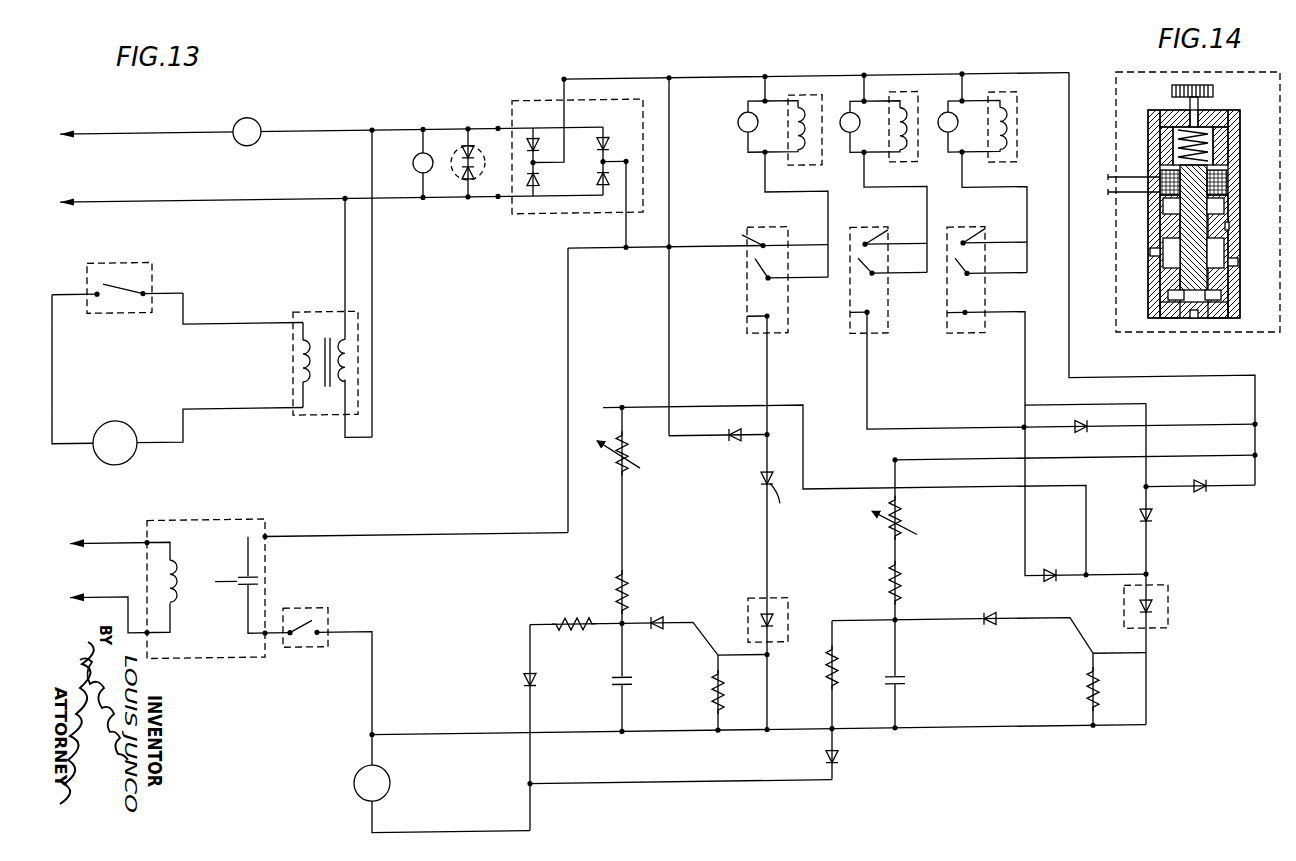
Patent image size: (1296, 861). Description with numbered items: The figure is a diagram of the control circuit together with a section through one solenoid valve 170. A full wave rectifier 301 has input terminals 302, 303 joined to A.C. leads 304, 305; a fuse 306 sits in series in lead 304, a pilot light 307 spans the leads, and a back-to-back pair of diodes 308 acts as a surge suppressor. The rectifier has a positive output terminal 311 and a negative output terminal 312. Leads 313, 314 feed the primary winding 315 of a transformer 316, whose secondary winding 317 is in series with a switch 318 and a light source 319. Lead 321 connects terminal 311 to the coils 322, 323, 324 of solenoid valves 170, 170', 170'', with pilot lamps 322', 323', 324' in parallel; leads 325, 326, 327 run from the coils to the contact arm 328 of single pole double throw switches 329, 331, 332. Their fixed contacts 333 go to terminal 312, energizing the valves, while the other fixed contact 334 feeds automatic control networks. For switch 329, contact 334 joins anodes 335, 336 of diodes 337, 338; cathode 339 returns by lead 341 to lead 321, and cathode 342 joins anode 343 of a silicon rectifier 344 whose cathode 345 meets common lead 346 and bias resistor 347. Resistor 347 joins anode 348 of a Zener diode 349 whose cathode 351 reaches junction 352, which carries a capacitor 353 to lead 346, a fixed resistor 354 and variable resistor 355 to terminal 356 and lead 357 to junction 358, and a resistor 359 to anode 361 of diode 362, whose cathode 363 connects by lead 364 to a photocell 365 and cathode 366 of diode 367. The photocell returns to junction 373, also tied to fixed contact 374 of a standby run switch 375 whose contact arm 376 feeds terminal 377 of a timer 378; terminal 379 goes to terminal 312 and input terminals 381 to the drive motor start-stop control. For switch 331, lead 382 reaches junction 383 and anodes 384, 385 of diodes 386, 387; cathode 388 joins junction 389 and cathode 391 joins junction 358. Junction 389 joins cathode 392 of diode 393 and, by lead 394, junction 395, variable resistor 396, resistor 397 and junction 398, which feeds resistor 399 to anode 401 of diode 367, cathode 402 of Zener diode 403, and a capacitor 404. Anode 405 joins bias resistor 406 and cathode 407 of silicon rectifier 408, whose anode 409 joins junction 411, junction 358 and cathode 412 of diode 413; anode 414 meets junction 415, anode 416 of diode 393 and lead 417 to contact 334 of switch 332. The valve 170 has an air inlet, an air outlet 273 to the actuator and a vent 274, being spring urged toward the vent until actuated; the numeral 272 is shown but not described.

In FIG. 13, the solenoid valve 170 is at (749, 178).
In FIG. 14, the solenoid valve 170 is at (1198, 190).
In FIG. 13, the solenoid valve 170' is at (858, 175).
In FIG. 13, the solenoid valve 170'' is at (1033, 162).
In FIG. 14, the valve port 272 is at (1238, 233).
In FIG. 14, the air outlet 273 is at (1145, 258).
In FIG. 14, the vent 274 is at (1238, 262).
In FIG. 13, the full wave rectifier 301 is at (535, 216).
In FIG. 13, the input terminal 302 is at (498, 126).
In FIG. 13, the input terminal 303 is at (498, 196).
In FIG. 13, the lead 304 is at (345, 122).
In FIG. 13, the lead 305 is at (319, 196).
In FIG. 13, the fuse 306 is at (244, 110).
In FIG. 13, the pilot light 307 is at (413, 160).
In FIG. 13, the diodes 308 is at (460, 139).
In FIG. 13, the positive output terminal 311 is at (564, 76).
In FIG. 13, the negative output terminal 312 is at (630, 139).
In FIG. 13, the lead 313 is at (374, 243).
In FIG. 13, the lead 314 is at (345, 254).
In FIG. 13, the primary winding 315 is at (353, 340).
In FIG. 13, the transformer 316 is at (325, 412).
In FIG. 13, the secondary winding 317 is at (300, 351).
In FIG. 13, the switch 318 is at (152, 260).
In FIG. 13, the light source 319 is at (120, 414).
In FIG. 13, the lead 321 is at (705, 77).
In FIG. 14, the lead 321 is at (1128, 176).
In FIG. 13, the coil 322 is at (795, 159).
In FIG. 13, the pilot lamp 322' is at (732, 125).
In FIG. 14, the pilot lamp 322' is at (1219, 179).
In FIG. 13, the coil 323 is at (894, 156).
In FIG. 13, the pilot lamp 323' is at (842, 115).
In FIG. 13, the coil 324 is at (993, 154).
In FIG. 13, the pilot lamp 324' is at (941, 115).
In FIG. 13, the lead 325 is at (788, 195).
In FIG. 14, the lead 325 is at (1130, 193).
In FIG. 13, the lead 326 is at (908, 192).
In FIG. 13, the lead 327 is at (1002, 193).
In FIG. 13, the contact arm 328 is at (755, 262).
In FIG. 13, the single pole double throw switch 329 is at (745, 335).
In FIG. 13, the single pole double throw switch 331 is at (852, 336).
In FIG. 13, the single pole double throw switch 332 is at (985, 337).
In FIG. 13, the fixed contact 333 is at (760, 248).
In FIG. 13, the fixed contact 334 is at (747, 318).
In FIG. 13, the anode 335 is at (745, 428).
In FIG. 13, the anode 336 is at (759, 478).
In FIG. 13, the diode 337 is at (732, 446).
In FIG. 13, the diode 338 is at (754, 490).
In FIG. 13, the cathode 339 is at (728, 433).
In FIG. 13, the lead 341 is at (669, 338).
In FIG. 13, the cathode 342 is at (790, 501).
In FIG. 13, the anode 343 is at (760, 607).
In FIG. 13, the silicon rectifier 344 is at (790, 616).
In FIG. 13, the cathode 345 is at (747, 632).
In FIG. 13, the common lead 346 is at (759, 733).
In FIG. 13, the bias resistor 347 is at (713, 684).
In FIG. 13, the anode 348 is at (660, 623).
In FIG. 13, the Zener diode 349 is at (660, 632).
In FIG. 13, the cathode 351 is at (652, 615).
In FIG. 13, the junction 352 is at (622, 622).
In FIG. 13, the capacitor 353 is at (612, 682).
In FIG. 13, the fixed resistor 354 is at (622, 570).
In FIG. 13, the variable resistor 355 is at (609, 515).
In FIG. 13, the terminal 356 is at (603, 407).
In FIG. 13, the lead 357 is at (640, 406).
In FIG. 13, the junction 358 is at (1086, 580).
In FIG. 13, the resistor 359 is at (560, 620).
In FIG. 13, the anode 361 is at (525, 672).
In FIG. 13, the diode 362 is at (523, 681).
In FIG. 13, the cathode 363 is at (526, 688).
In FIG. 13, the lead 364 is at (533, 716).
In FIG. 13, the photocell 365 is at (390, 774).
In FIG. 13, the cathode 366 is at (835, 769).
In FIG. 13, the diode 367 is at (848, 759).
In FIG. 13, the junction 373 is at (374, 730).
In FIG. 13, the fixed contact 374 is at (318, 636).
In FIG. 13, the standby run switch 375 is at (320, 606).
In FIG. 13, the contact arm 376 is at (300, 614).
In FIG. 13, the terminal 377 is at (265, 647).
In FIG. 13, the timer 378 is at (267, 515).
In FIG. 13, the terminal 379 is at (268, 530).
In FIG. 13, the input terminals 381 is at (146, 538).
In FIG. 13, the lead 382 is at (867, 404).
In FIG. 13, the junction 383 is at (1024, 433).
In FIG. 13, the anode 384 is at (1076, 434).
In FIG. 13, the anode 385 is at (1050, 576).
In FIG. 13, the diode 386 is at (1080, 439).
In FIG. 13, the diode 387 is at (1050, 588).
In FIG. 13, the cathode 388 is at (1087, 433).
In FIG. 13, the junction 389 is at (1252, 432).
In FIG. 13, the cathode 391 is at (1084, 582).
In FIG. 13, the cathode 392 is at (1207, 495).
In FIG. 13, the diode 393 is at (1205, 502).
In FIG. 13, the lead 394 is at (982, 464).
In FIG. 13, the junction 395 is at (895, 463).
In FIG. 13, the variable resistor 396 is at (905, 514).
In FIG. 13, the resistor 397 is at (905, 586).
In FIG. 13, the junction 398 is at (896, 626).
In FIG. 13, the resistor 399 is at (838, 663).
In FIG. 13, the anode 401 is at (836, 752).
In FIG. 13, the cathode 402 is at (990, 623).
In FIG. 13, the Zener diode 403 is at (988, 638).
In FIG. 13, the capacitor 404 is at (905, 684).
In FIG. 13, the anode 405 is at (995, 633).
In FIG. 13, the bias resistor 406 is at (1093, 697).
In FIG. 13, the cathode 407 is at (1140, 621).
In FIG. 13, the silicon rectifier 408 is at (1168, 620).
In FIG. 13, the anode 409 is at (1161, 595).
In FIG. 13, the junction 411 is at (1146, 580).
In FIG. 13, the cathode 412 is at (1144, 521).
In FIG. 13, the diode 413 is at (1155, 527).
In FIG. 13, the anode 414 is at (1146, 506).
In FIG. 13, the junction 415 is at (1146, 493).
In FIG. 13, the anode 416 is at (1200, 489).
In FIG. 13, the lead 417 is at (1069, 378).